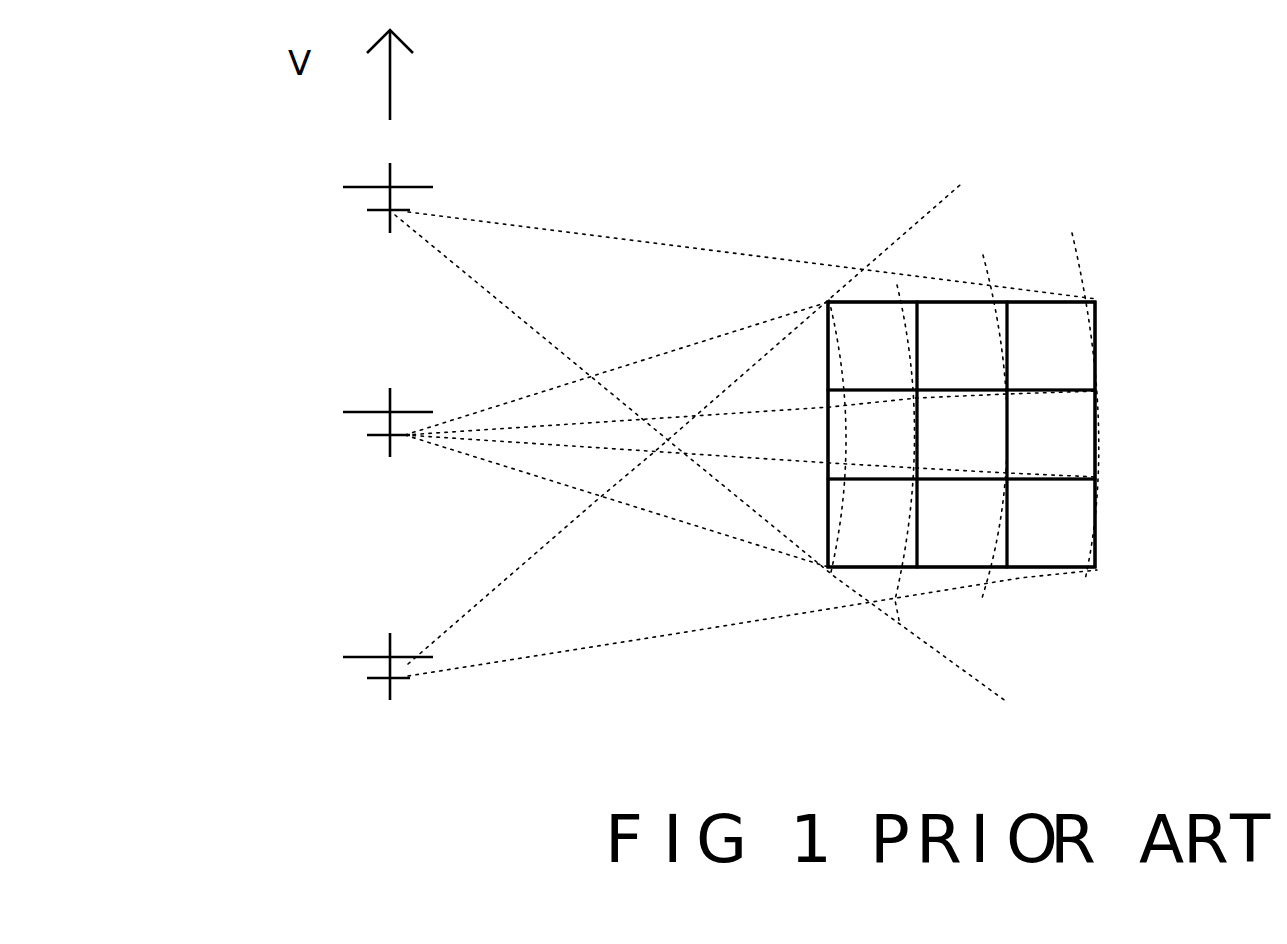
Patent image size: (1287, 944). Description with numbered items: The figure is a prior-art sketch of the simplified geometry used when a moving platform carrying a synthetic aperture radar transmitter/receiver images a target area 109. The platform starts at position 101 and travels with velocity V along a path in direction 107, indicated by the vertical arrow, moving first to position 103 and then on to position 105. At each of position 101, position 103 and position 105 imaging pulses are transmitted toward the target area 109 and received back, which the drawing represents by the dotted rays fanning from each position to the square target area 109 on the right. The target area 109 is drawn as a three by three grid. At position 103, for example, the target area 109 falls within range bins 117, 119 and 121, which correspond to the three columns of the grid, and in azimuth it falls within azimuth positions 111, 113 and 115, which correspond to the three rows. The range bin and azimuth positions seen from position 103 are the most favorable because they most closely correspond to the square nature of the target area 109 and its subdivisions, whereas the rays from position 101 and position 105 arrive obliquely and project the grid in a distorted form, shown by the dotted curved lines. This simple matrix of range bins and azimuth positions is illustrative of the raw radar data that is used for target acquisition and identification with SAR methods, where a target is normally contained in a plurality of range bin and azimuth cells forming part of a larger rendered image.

The position 101 is at (348, 666).
The position 103 is at (348, 422).
The position 105 is at (348, 196).
The direction 107 is at (438, 75).
The target area 109 is at (1127, 290).
The azimuth position 111 is at (1080, 348).
The azimuth position 113 is at (1080, 432).
The azimuth position 115 is at (1080, 507).
The range bin 117 is at (880, 582).
The range bin 119 is at (955, 578).
The range bin 121 is at (1053, 463).